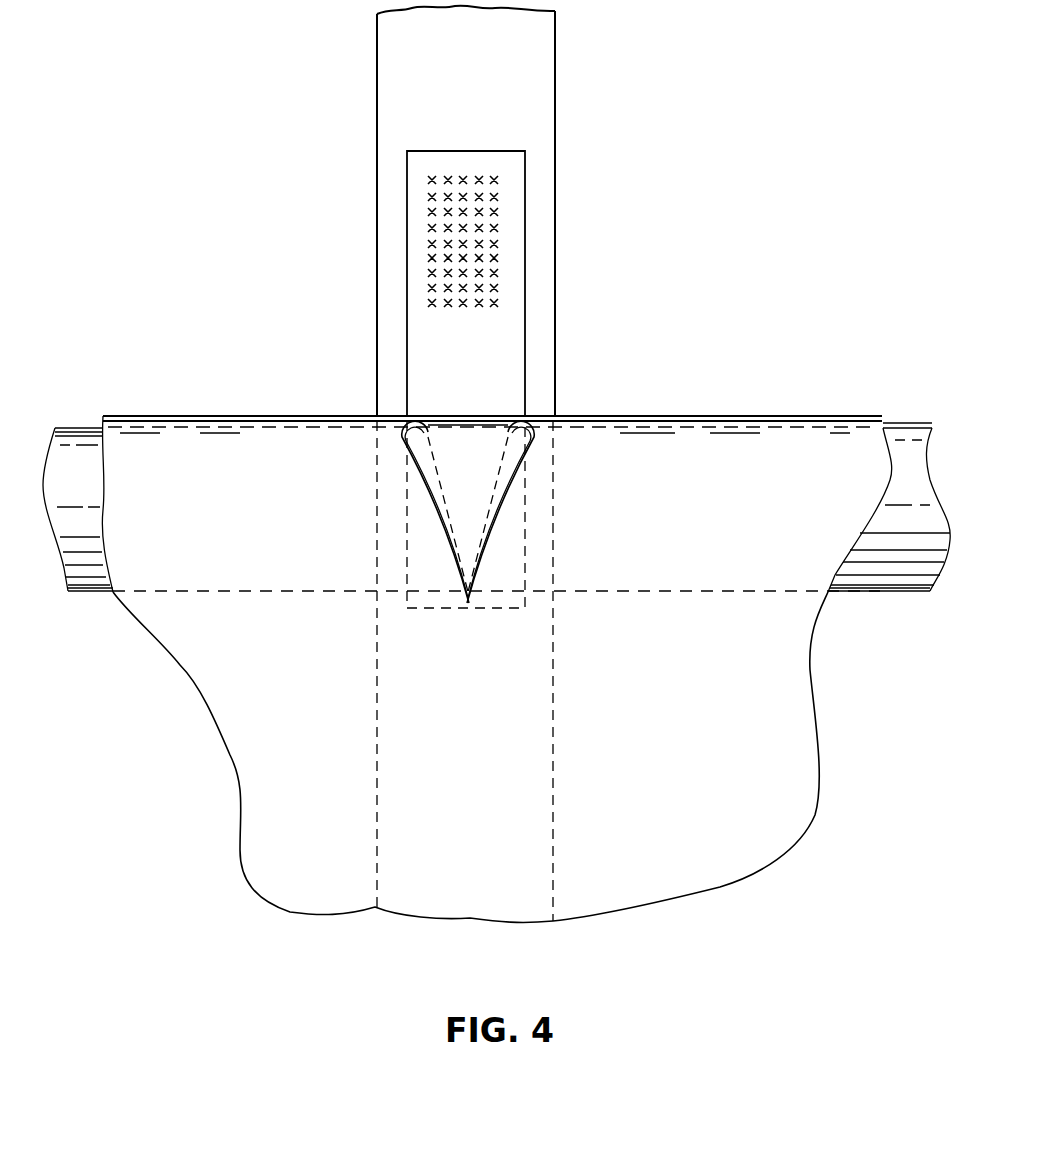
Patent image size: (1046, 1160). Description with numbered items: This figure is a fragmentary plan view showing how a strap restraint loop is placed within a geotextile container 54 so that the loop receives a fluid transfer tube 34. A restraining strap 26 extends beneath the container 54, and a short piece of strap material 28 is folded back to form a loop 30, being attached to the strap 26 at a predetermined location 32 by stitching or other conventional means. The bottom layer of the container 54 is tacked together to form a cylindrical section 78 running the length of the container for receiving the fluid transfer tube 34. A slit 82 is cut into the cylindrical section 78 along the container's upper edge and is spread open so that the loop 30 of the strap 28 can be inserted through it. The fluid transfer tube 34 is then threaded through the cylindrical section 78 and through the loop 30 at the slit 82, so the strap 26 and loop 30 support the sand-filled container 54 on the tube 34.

The strap member 26 is at (525, 124).
The short piece of strap material 28 is at (508, 388).
The predetermined location 32 is at (494, 244).
The cylindrical section 78 is at (186, 497).
The slit 82 is at (475, 508).
The loop 30 is at (510, 560).
The fluid transfer tube 34 is at (90, 572).
The geotextile container 54 is at (672, 750).